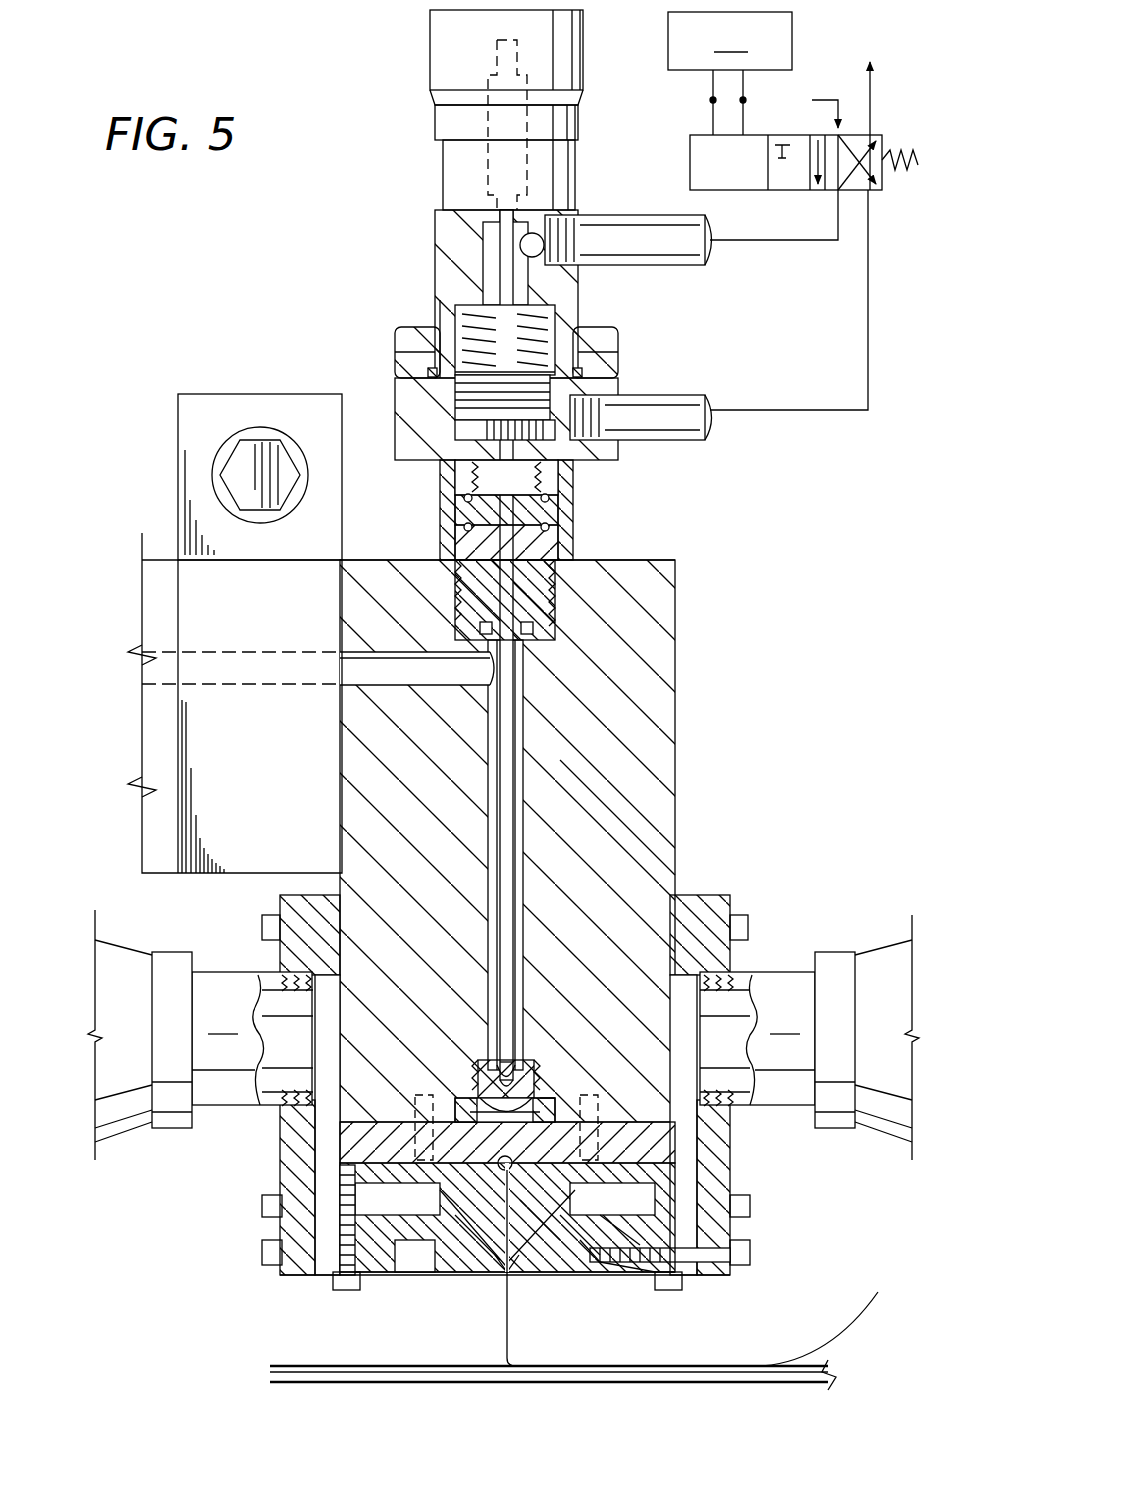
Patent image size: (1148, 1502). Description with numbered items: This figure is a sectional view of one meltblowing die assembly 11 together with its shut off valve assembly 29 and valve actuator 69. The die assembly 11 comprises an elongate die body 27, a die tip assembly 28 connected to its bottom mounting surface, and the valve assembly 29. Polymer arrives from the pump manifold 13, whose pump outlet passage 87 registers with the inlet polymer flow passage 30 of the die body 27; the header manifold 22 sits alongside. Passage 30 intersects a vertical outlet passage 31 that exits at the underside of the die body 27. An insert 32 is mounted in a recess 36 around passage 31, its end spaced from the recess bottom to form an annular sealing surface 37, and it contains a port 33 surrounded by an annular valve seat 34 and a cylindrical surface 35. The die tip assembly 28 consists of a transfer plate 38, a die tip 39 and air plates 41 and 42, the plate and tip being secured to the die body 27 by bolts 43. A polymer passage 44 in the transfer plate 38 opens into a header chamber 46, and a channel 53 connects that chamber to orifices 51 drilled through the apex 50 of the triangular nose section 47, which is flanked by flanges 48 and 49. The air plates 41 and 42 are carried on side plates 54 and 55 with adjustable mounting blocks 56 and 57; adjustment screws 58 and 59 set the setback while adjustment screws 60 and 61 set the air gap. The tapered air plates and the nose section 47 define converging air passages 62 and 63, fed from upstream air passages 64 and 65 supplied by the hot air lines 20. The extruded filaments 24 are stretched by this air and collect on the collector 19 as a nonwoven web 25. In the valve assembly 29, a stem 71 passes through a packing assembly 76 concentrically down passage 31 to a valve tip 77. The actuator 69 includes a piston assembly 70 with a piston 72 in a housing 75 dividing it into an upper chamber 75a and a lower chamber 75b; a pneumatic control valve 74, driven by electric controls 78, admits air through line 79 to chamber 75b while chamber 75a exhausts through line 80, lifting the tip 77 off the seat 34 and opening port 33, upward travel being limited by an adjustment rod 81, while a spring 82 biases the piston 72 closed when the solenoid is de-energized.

The die assembly 11 is at (683, 616).
The pump manifold 13 is at (222, 605).
The collector 19 is at (790, 1382).
The air line 20 is at (503, 1035).
The header manifold 22 is at (220, 412).
The filaments 24 is at (560, 1343).
The nonwoven web 25 is at (838, 1322).
The die body 27 is at (615, 866).
The die tip assembly 28 is at (272, 1325).
The valve assembly 29 is at (684, 575).
The polymer flow passage 30 is at (410, 665).
The polymer flow passage 31 is at (520, 782).
The insert 32 is at (470, 1090).
The port 33 is at (530, 1096).
The valve seat 34 is at (480, 1096).
The cylindrical surface 35 is at (515, 1062).
The recess 36 is at (548, 1095).
The annular sealing surface 37 is at (480, 1112).
The transfer plate 38 is at (680, 1152).
The die tip 39 is at (580, 1228).
The air plate 41 is at (382, 1278).
The air plate 42 is at (620, 1255).
The bolts 43 is at (420, 1120).
The polymer passage 44 is at (440, 1145).
The header channel or chamber 46 is at (510, 1160).
The nose section 47 is at (495, 1252).
The flange 48 is at (385, 1258).
The flange 49 is at (640, 1278).
The apex 50 is at (512, 1280).
The orifices 51 is at (500, 1274).
The channel 53 is at (480, 1238).
The side plate 54 is at (305, 1185).
The side plate 55 is at (720, 1182).
The mounting block 56 is at (300, 1272).
The mounting block 57 is at (665, 1215).
The adjustment screw 58 is at (345, 1270).
The adjustment screw 59 is at (672, 1275).
The adjustment screw 60 is at (262, 1255).
The adjustment screw 61 is at (748, 1255).
The converging air passage 62 is at (430, 1245).
The converging air passage 63 is at (520, 1232).
The air passage 64 is at (325, 1135).
The air passage 65 is at (688, 1127).
The valve actuator 69 is at (428, 148).
The piston assembly 70 is at (440, 366).
The valve stem 71 is at (510, 695).
The piston 72 is at (562, 372).
The pneumatic control valve 74 is at (800, 190).
The housing 75 is at (625, 366).
The upper chamber 75a is at (468, 300).
The lower chamber 75b is at (460, 416).
The packing assembly 76 is at (545, 553).
The valve tip 77 is at (492, 1072).
The electric controls 78 is at (730, 73).
The air line 79 is at (796, 420).
The air line 80 is at (712, 246).
The adjustment rod 81 is at (505, 262).
The spring 82 is at (455, 348).
The pump outlet passage 87 is at (290, 656).